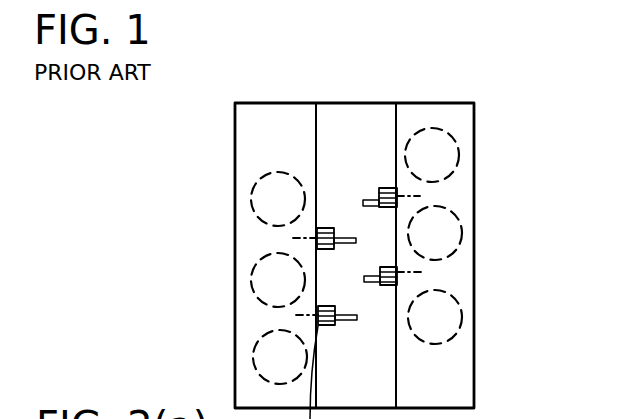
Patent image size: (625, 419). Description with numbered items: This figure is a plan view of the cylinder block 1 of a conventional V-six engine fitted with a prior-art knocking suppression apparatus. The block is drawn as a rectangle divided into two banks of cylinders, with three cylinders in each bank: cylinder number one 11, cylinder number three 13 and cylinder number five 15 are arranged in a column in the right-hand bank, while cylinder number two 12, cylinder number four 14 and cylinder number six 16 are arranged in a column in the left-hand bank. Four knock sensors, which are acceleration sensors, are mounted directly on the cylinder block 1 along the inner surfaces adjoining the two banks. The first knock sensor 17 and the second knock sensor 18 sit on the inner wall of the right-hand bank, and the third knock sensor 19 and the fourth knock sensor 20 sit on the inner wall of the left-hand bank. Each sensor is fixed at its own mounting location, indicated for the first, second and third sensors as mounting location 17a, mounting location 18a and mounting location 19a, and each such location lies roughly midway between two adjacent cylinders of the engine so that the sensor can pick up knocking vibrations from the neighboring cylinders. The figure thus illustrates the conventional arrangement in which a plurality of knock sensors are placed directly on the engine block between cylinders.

The cylinder block 1 is at (352, 103).
The cylinder #1 11 is at (459, 158).
The cylinder #2 12 is at (253, 203).
The cylinder #3 13 is at (462, 230).
The cylinder #4 14 is at (253, 277).
The cylinder #5 15 is at (462, 317).
The cylinder #6 16 is at (256, 365).
The first knock sensor 17 is at (385, 188).
The second knock sensor 18 is at (386, 285).
The third knock sensor 19 is at (322, 228).
The fourth knock sensor 20 is at (326, 326).
The mounting location 17a is at (400, 198).
The mounting location 18a is at (400, 277).
The mounting location 19a is at (310, 236).